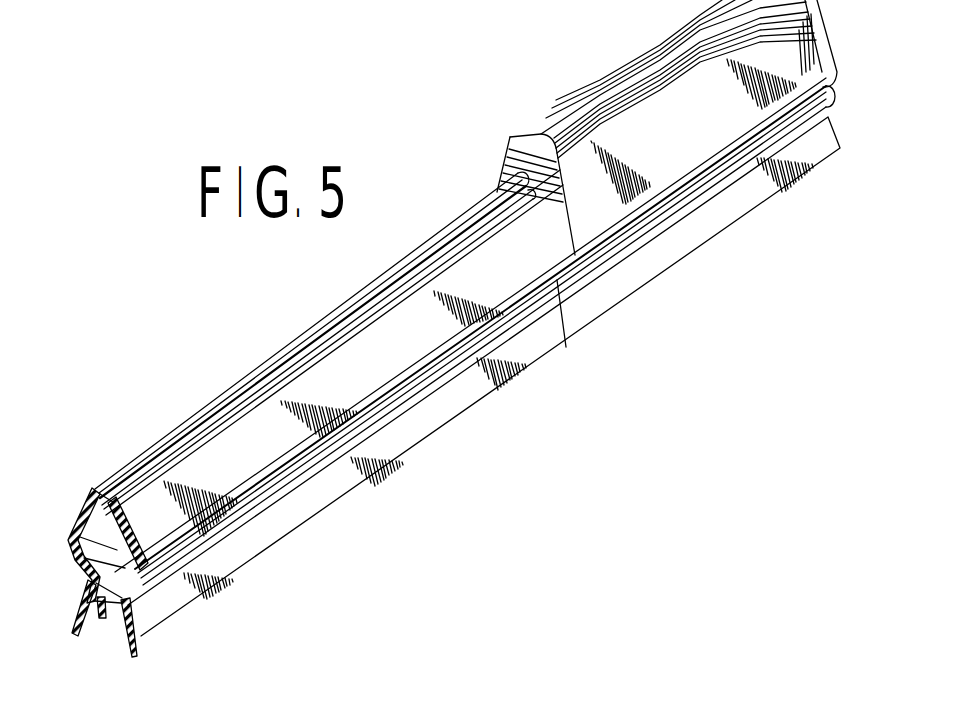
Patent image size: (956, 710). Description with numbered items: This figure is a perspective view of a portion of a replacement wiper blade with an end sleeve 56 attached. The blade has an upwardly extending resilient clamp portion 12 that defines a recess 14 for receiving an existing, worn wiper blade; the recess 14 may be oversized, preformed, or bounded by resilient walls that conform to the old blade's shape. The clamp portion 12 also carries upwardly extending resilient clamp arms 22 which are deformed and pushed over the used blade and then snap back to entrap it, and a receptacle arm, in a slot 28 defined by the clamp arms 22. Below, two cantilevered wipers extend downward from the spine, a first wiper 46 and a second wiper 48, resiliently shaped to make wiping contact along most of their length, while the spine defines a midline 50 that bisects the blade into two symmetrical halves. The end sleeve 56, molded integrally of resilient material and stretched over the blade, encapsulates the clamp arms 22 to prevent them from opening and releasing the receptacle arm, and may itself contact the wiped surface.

The clamp portion 12 is at (237, 483).
The recess 14 is at (82, 552).
The clamp arms 22 is at (88, 490).
The slot 28 is at (137, 648).
The first wiper 46 is at (72, 633).
The second wiper 48 is at (178, 612).
The midline 50 is at (103, 622).
The end sleeve 56 is at (568, 113).